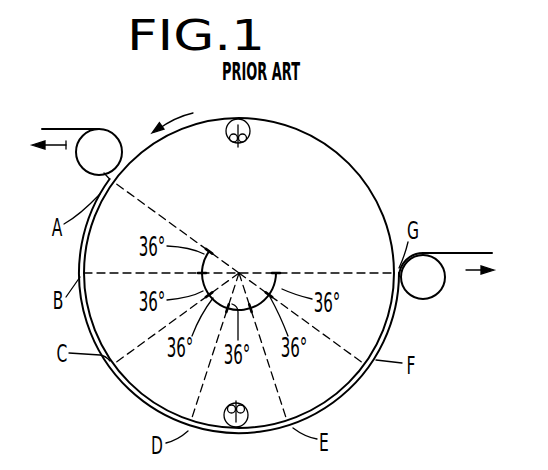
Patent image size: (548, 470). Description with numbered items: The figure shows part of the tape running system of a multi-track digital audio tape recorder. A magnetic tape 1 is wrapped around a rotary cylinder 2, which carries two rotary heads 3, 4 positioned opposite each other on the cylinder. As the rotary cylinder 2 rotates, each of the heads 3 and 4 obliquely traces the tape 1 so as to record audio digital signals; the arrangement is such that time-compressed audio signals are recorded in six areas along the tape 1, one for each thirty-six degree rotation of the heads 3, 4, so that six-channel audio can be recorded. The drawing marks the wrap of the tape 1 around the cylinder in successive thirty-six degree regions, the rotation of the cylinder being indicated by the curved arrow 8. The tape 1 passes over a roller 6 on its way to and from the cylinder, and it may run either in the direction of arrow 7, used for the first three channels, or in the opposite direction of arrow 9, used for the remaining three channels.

The magnetic tape 1 is at (447, 254).
The rotary cylinder 2 is at (379, 207).
The rotary head 3 is at (251, 133).
The rotary head 4 is at (244, 408).
The roller 6 is at (423, 257).
The arrow 7 is at (467, 272).
The drum rotation direction arrow 8 is at (163, 122).
The arrow 9 is at (54, 148).